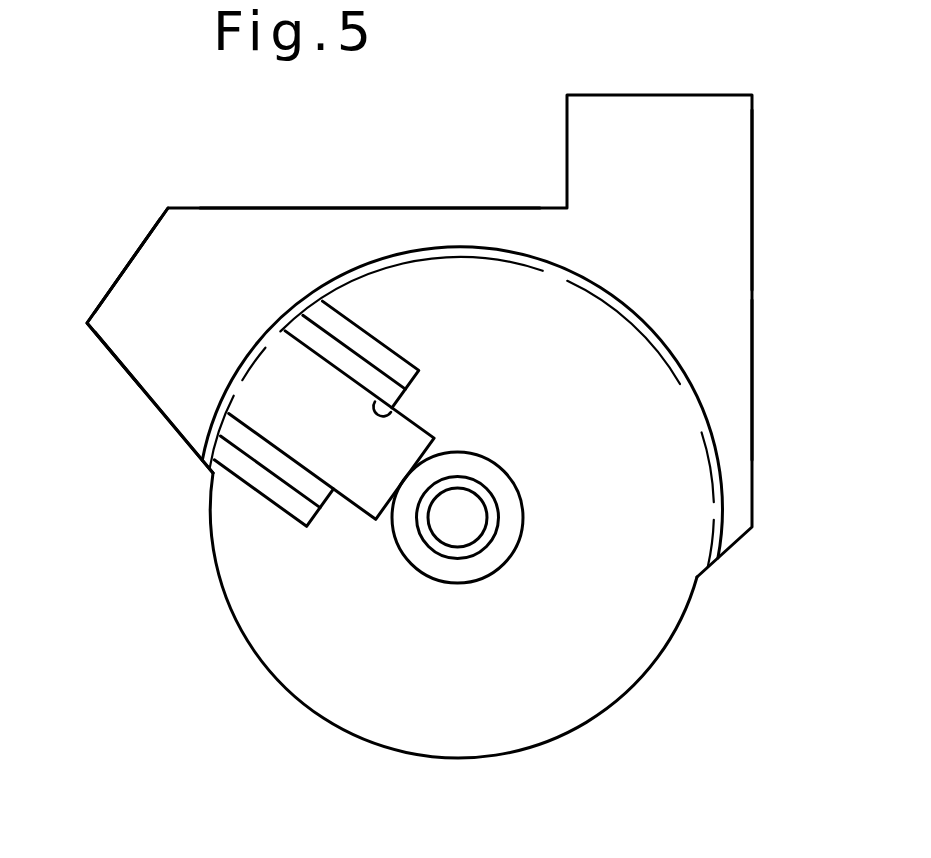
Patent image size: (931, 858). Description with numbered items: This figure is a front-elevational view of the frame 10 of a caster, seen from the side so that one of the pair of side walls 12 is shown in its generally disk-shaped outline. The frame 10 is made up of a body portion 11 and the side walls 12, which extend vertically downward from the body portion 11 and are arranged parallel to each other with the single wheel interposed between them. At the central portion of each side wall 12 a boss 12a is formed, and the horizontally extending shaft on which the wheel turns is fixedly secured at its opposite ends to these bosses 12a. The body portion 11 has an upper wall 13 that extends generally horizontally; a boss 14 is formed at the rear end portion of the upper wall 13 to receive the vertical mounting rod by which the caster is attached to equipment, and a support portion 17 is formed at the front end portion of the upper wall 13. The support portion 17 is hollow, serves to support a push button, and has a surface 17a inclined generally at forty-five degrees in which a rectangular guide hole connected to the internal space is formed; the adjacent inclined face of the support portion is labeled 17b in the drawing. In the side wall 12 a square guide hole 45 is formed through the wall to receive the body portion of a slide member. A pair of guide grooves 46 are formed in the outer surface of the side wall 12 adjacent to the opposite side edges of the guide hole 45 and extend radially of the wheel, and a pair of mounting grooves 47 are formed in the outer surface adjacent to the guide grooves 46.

The frame 10 is at (783, 255).
The body portion 11 is at (414, 203).
The side wall 12 is at (647, 630).
The boss 12a is at (508, 505).
The upper wall 13 is at (331, 207).
The boss 14 is at (732, 147).
The support portion 17 is at (140, 232).
The inclined surface 17a is at (116, 277).
The inclined surface 17b is at (170, 373).
The guide hole 45 is at (397, 413).
The guide groove 46 is at (377, 383).
The mounting groove 47 is at (370, 350).